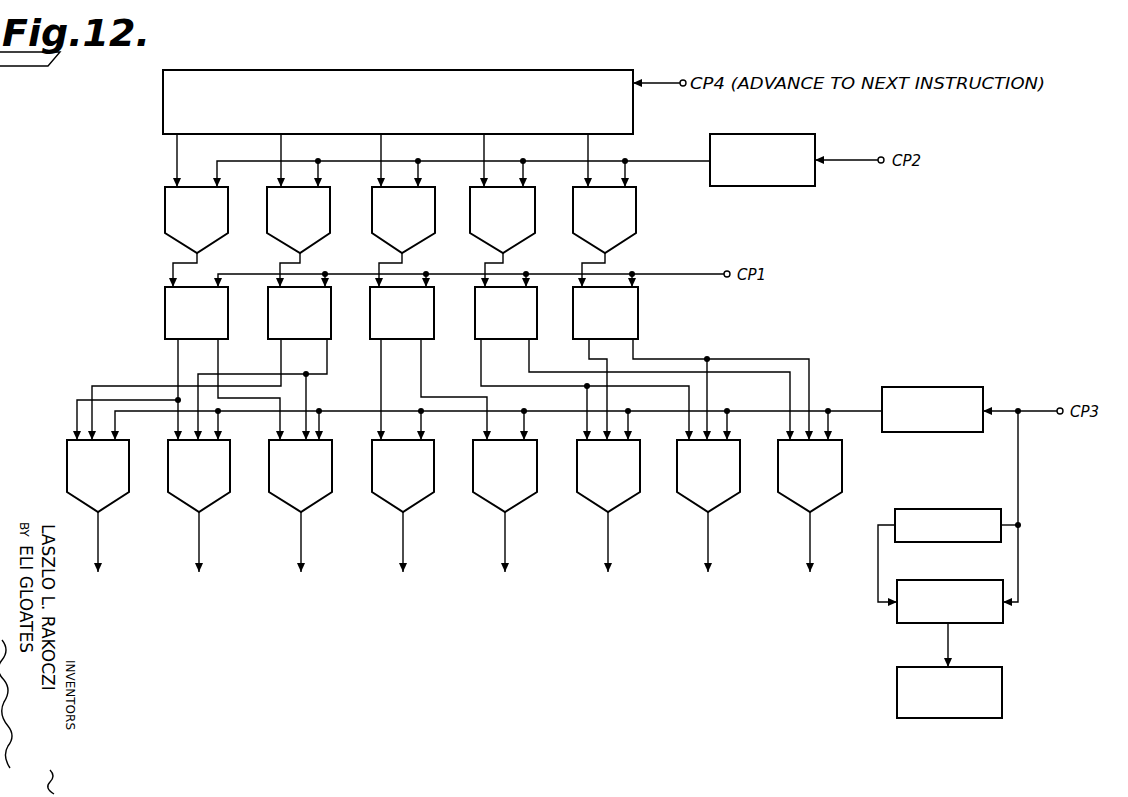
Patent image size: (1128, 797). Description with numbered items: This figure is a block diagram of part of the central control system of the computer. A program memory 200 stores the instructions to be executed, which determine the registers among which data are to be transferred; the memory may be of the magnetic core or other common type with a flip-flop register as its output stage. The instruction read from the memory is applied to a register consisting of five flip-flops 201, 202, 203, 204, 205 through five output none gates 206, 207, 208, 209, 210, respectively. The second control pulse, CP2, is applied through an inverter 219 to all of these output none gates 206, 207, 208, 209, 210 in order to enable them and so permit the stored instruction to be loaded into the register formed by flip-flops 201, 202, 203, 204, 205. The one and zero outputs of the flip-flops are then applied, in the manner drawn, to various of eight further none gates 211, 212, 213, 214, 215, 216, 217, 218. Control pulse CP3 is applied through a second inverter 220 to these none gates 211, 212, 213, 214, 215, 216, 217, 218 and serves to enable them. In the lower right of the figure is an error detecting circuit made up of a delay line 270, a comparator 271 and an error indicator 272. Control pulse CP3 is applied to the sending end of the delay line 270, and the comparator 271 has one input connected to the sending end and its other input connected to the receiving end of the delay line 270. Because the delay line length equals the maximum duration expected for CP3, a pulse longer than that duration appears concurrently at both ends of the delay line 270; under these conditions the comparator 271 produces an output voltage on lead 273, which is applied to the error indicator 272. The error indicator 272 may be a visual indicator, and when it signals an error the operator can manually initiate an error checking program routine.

The program memory 200 is at (400, 70).
The flip-flop 201 is at (165, 335).
The flip-flop 202 is at (272, 341).
The flip-flop 203 is at (372, 341).
The flip-flop 204 is at (476, 343).
The flip-flop 205 is at (580, 343).
The output none gate 206 is at (165, 218).
The output none gate 207 is at (278, 242).
The output none gate 208 is at (383, 242).
The output none gate 209 is at (486, 242).
The output none gate 210 is at (612, 241).
The none gate 211 is at (115, 505).
The none gate 212 is at (188, 514).
The none gate 213 is at (281, 505).
The none gate 214 is at (396, 508).
The none gate 215 is at (493, 508).
The none gate 216 is at (592, 505).
The none gate 217 is at (702, 510).
The none gate 218 is at (804, 505).
The inverter 219 is at (812, 138).
The inverter 220 is at (949, 387).
The delay line 270 is at (956, 509).
The comparator 271 is at (940, 580).
The error indicator 272 is at (981, 666).
The lead 273 is at (946, 643).